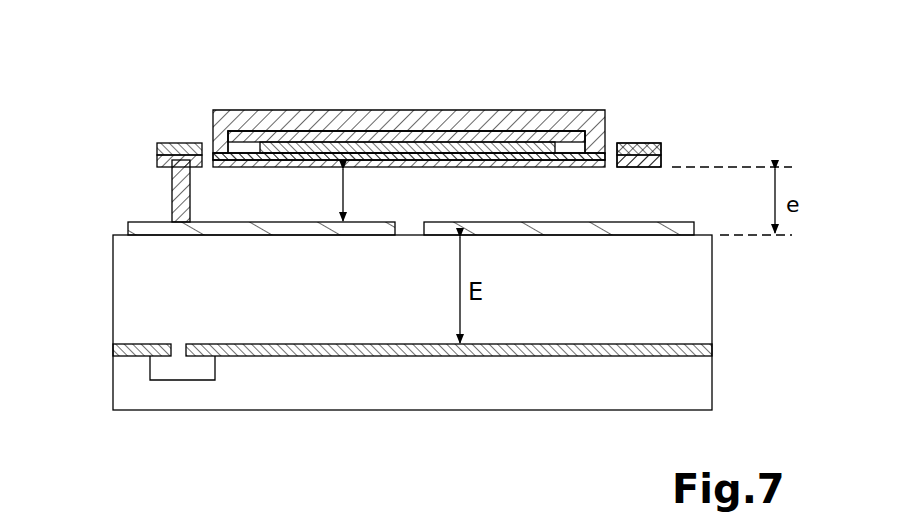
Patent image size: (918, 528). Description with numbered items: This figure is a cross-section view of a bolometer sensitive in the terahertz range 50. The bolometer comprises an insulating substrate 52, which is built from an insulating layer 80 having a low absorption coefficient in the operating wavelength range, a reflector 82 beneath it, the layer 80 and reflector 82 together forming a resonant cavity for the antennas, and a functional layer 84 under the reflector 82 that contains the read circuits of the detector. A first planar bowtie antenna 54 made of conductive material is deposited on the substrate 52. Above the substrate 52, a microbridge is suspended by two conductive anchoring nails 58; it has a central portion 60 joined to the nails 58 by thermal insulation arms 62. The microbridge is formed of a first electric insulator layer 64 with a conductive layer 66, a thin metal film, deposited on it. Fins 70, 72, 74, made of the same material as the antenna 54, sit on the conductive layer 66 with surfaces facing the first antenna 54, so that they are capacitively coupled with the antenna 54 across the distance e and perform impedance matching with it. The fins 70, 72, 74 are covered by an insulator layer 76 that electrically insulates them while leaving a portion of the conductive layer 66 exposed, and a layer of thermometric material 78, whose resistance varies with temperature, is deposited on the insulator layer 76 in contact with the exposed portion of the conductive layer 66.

The bolometer sensitive in the terahertz range 50 is at (135, 58).
The insulating substrate 52 is at (93, 234).
The first planar bowtie antenna 54 is at (246, 222).
The conductive anchoring nails 58 is at (170, 204).
The central portion 60 is at (476, 84).
The thermal insulation arms 62 is at (630, 146).
The first electric insulator layer 64 is at (156, 162).
The conductive layer 66 is at (156, 151).
The fin 70 is at (323, 142).
The fin 72 is at (418, 140).
The fin 74 is at (530, 146).
The insulator layer 76 is at (246, 134).
The layer of thermometric material 78 is at (284, 118).
The insulating layer 80 is at (688, 290).
The reflector 82 is at (716, 352).
The functional layer 84 is at (690, 388).